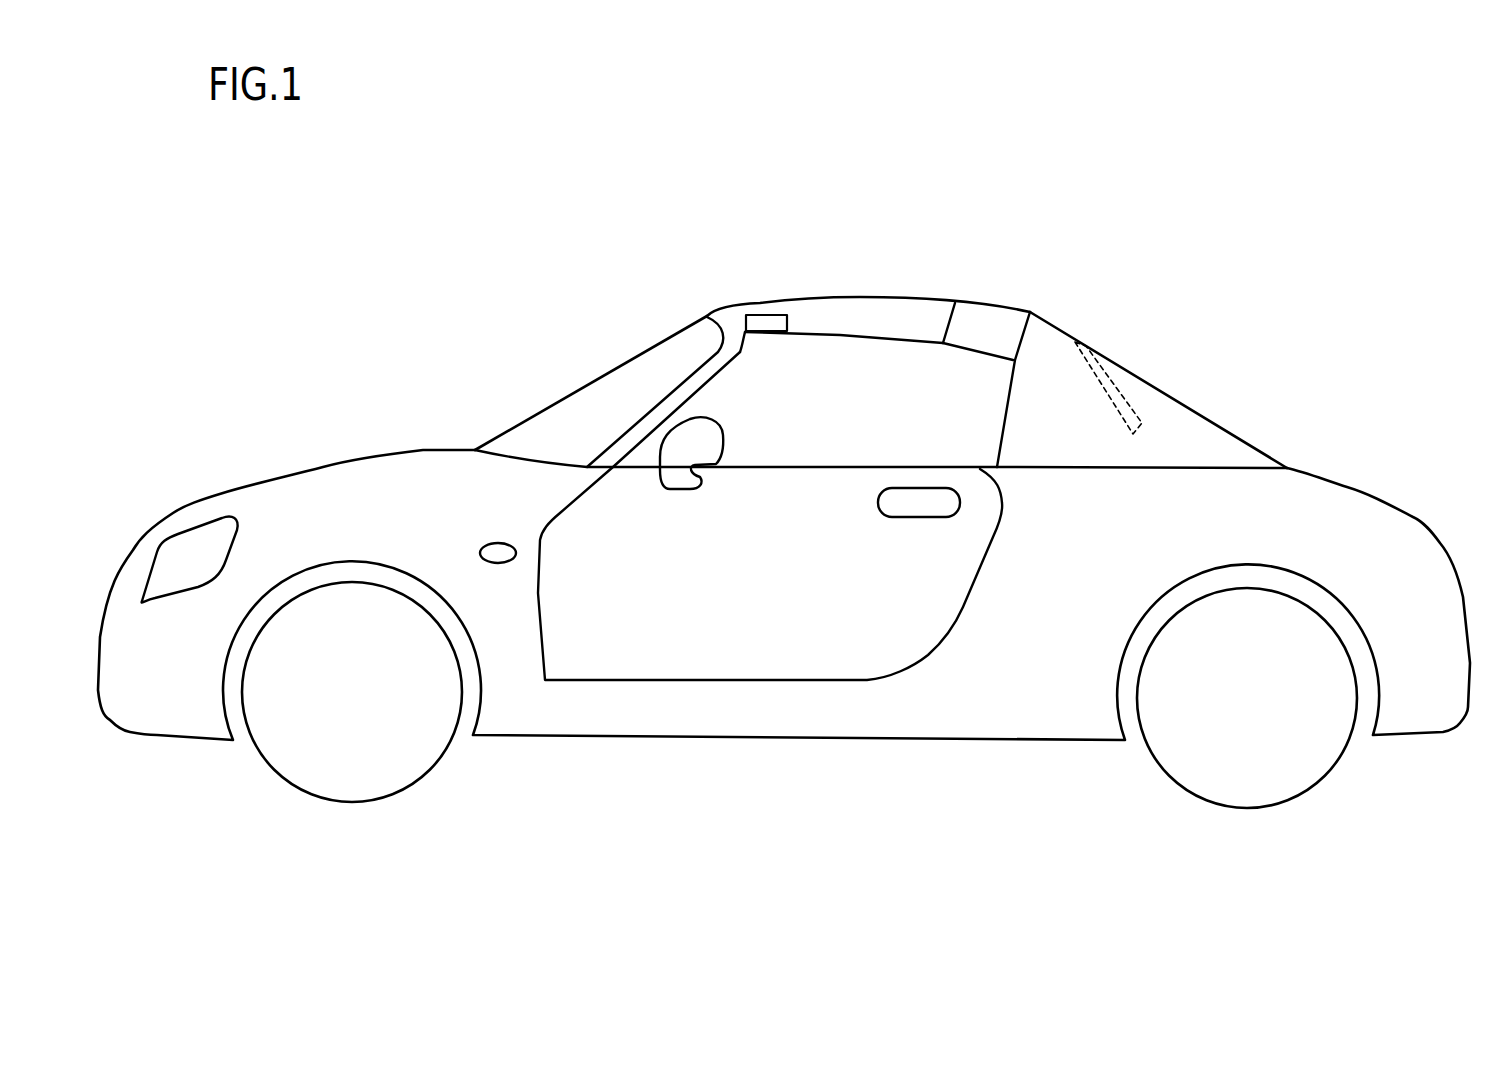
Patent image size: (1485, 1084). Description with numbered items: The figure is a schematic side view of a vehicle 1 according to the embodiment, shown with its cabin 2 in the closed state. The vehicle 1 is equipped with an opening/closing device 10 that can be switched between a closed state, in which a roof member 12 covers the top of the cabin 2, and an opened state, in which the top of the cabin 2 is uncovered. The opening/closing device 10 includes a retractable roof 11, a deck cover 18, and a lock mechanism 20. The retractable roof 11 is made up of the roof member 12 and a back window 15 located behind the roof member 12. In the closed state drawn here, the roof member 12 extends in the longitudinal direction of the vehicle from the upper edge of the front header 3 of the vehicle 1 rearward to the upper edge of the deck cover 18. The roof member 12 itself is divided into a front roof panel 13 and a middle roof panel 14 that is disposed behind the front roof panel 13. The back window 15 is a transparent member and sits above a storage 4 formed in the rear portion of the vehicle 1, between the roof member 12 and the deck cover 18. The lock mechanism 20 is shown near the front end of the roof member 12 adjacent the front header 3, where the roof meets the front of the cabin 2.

The vehicle 1 is at (432, 268).
The cabin 2 is at (780, 593).
The front header 3 is at (707, 312).
The storage 4 is at (1105, 596).
The opening/closing device 10 is at (1238, 295).
The retractable roof 11 is at (882, 248).
The roof member 12 is at (841, 296).
The front roof panel 13 is at (909, 297).
The middle roof panel 14 is at (988, 302).
The back window 15 is at (1122, 397).
The deck cover 18 is at (1222, 413).
The lock mechanism 20 is at (765, 315).